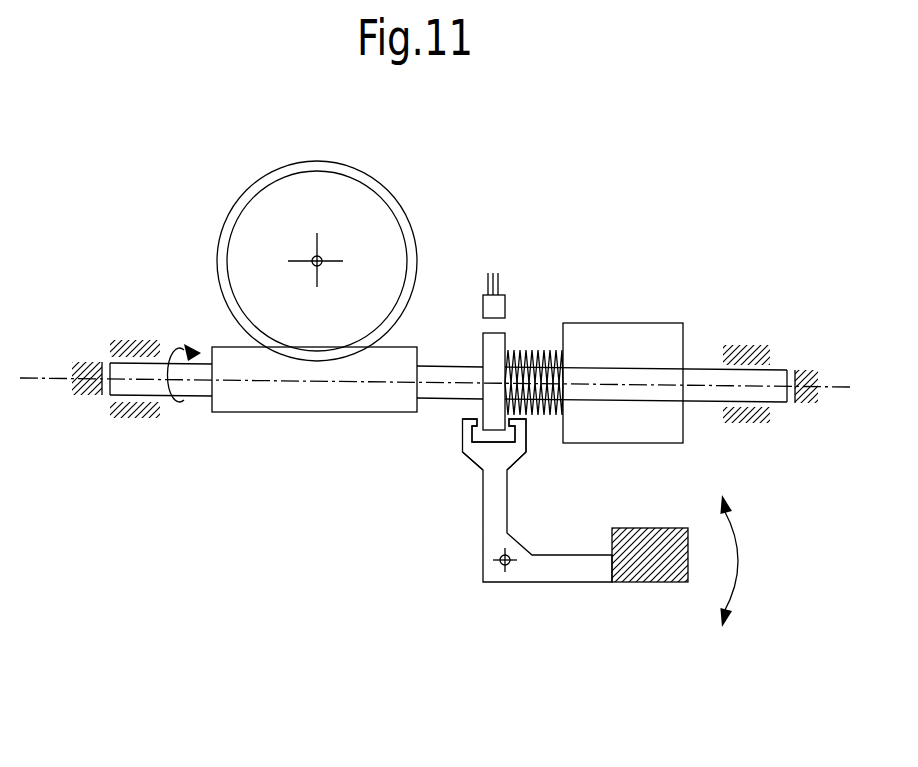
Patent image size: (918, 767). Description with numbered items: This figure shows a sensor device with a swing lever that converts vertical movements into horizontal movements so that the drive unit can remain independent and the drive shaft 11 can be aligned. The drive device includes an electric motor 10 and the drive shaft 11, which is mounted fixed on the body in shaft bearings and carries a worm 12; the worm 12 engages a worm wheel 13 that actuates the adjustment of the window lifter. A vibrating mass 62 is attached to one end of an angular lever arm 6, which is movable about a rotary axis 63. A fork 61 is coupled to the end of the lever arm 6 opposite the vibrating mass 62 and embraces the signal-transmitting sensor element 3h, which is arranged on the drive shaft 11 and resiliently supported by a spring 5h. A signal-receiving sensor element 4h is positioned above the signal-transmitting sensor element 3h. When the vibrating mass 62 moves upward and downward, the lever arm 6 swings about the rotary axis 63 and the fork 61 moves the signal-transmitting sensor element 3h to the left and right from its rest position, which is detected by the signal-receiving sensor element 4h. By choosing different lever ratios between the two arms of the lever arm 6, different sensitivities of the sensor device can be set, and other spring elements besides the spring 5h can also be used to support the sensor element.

The worm wheel 13 is at (253, 227).
The worm 12 is at (257, 397).
The drive shaft 11 is at (700, 388).
The electric motor 10 is at (622, 332).
The signal-receiving sensor element 4h is at (488, 305).
The signal-transmitting sensor element 3h is at (450, 412).
The spring 5h is at (542, 350).
The angular lever arm 6 is at (547, 544).
The fork 61 is at (482, 450).
The vibrating mass 62 is at (650, 568).
The rotary axis 63 is at (505, 567).